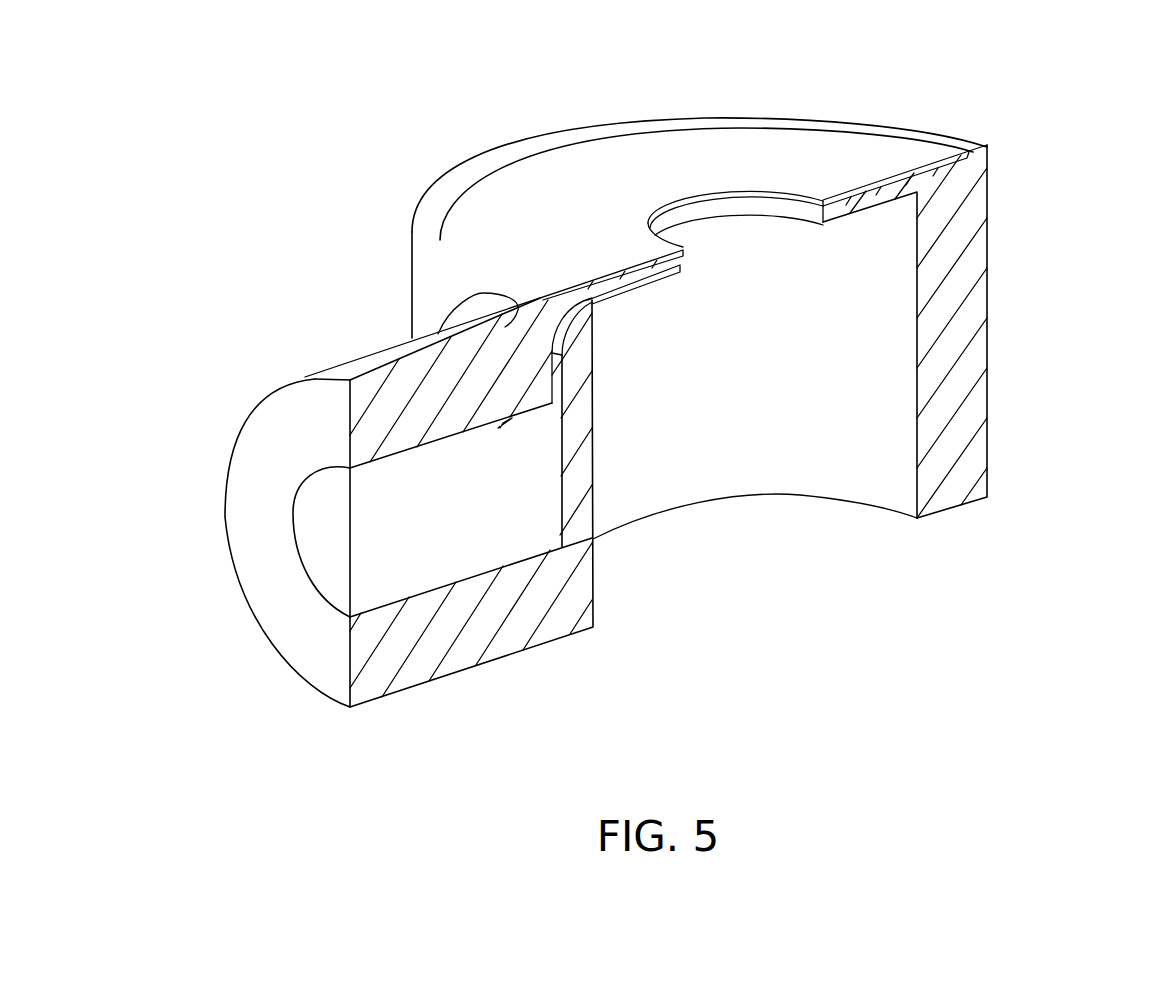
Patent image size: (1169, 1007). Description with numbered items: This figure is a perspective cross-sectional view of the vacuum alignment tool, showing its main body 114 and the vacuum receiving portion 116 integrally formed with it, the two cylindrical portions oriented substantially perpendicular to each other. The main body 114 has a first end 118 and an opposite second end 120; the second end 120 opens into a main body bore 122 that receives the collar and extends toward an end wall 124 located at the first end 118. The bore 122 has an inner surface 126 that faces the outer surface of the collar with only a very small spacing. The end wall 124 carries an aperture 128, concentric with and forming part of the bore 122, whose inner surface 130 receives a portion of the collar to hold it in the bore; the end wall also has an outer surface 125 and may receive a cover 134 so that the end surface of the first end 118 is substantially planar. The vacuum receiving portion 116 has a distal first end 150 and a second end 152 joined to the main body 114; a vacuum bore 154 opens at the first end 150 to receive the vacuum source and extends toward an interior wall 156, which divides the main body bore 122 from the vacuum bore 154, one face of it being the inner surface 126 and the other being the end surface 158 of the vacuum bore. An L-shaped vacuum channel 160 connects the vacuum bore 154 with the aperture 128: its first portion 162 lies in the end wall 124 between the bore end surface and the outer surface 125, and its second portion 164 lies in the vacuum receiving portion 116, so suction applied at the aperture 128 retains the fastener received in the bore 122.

The main body 114 is at (957, 328).
The vacuum receiving portion 116 is at (280, 422).
The first end 118 is at (388, 200).
The second end 120 is at (1003, 492).
The main body bore 122 is at (866, 443).
The end wall 124 is at (845, 208).
The outer surface 125 is at (497, 163).
The inner surface 126 is at (897, 245).
The aperture 128 is at (742, 260).
The inner surface 130 is at (697, 212).
The cover 134 is at (913, 153).
The first end 150 is at (349, 720).
The second end 152 is at (470, 323).
The vacuum bore 154 is at (363, 531).
The interior wall 156 is at (583, 484).
The end surface 158 is at (537, 495).
The vacuum channel 160 is at (570, 311).
The first portion 162 is at (670, 271).
The second portion 164 is at (553, 382).